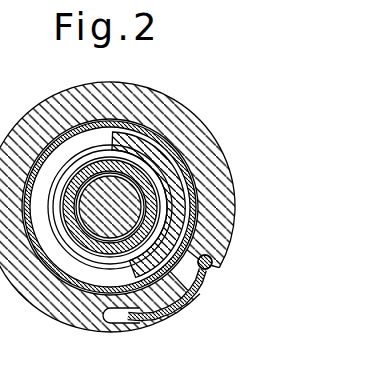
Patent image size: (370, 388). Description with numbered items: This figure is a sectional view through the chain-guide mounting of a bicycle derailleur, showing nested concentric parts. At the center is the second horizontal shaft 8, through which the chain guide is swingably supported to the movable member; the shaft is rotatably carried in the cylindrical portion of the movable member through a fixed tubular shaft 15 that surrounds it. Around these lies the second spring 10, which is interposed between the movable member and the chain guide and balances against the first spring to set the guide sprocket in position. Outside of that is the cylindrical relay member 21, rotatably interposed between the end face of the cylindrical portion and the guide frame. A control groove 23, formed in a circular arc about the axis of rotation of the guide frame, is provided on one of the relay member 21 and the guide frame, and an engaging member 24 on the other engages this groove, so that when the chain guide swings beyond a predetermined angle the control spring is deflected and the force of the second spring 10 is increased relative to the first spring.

The second horizontal shaft 8 is at (123, 183).
The second spring 10 is at (175, 199).
The fixed tubular shaft 15 is at (140, 194).
The relay member 21 is at (228, 226).
The control groove 23 is at (192, 289).
The engaging member 24 is at (213, 264).